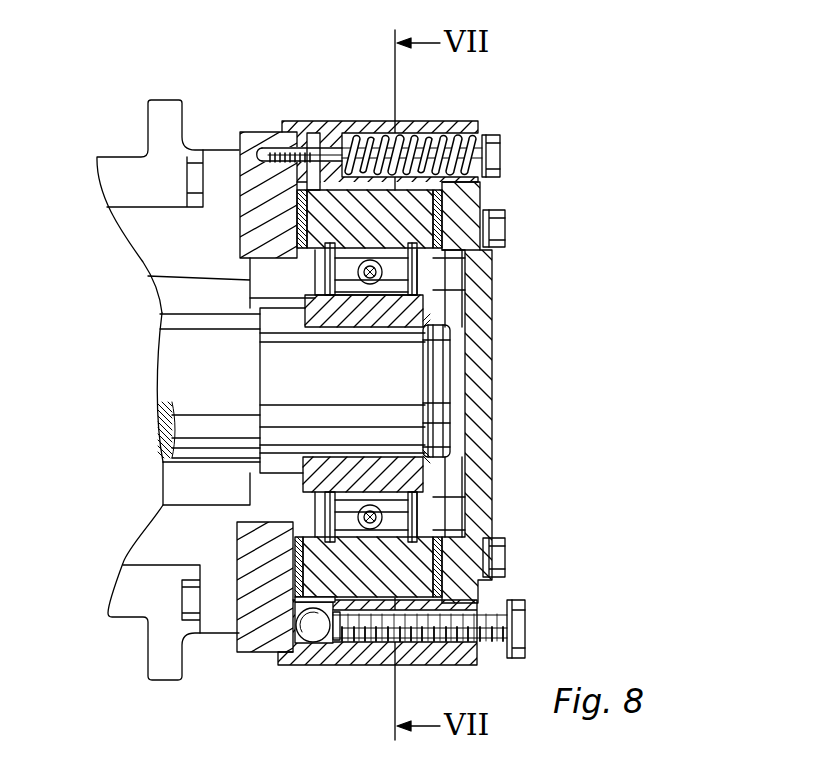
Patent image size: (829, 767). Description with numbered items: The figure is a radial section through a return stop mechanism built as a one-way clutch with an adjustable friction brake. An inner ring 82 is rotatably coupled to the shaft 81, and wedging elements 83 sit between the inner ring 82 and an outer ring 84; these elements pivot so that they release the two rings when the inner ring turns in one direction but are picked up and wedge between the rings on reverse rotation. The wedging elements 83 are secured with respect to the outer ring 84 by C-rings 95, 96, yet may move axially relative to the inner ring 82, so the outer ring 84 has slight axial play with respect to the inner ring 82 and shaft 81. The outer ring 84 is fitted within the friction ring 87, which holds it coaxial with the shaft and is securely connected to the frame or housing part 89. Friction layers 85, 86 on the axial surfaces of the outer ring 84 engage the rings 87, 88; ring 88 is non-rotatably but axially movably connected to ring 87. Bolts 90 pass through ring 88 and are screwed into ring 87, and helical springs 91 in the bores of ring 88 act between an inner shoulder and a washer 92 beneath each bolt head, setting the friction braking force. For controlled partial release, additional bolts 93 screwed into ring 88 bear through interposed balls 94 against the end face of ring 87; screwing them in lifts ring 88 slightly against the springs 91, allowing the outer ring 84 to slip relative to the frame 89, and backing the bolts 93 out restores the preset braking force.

The shaft 81 is at (200, 401).
The inner ring 82 is at (313, 313).
The wedging elements 83 is at (490, 503).
The outer ring 84 is at (328, 213).
The friction layer 85 is at (302, 250).
The friction layer 86 is at (442, 212).
The friction ring 87 is at (238, 145).
The ring 88 is at (466, 233).
The frame or housing part 89 is at (133, 158).
The bolt 90 is at (443, 177).
The helical spring 91 is at (349, 177).
The washer 92 is at (488, 136).
The bolt 93 is at (488, 645).
The ball 94 is at (300, 640).
The C-ring 95 is at (457, 285).
The C-ring 96 is at (313, 262).